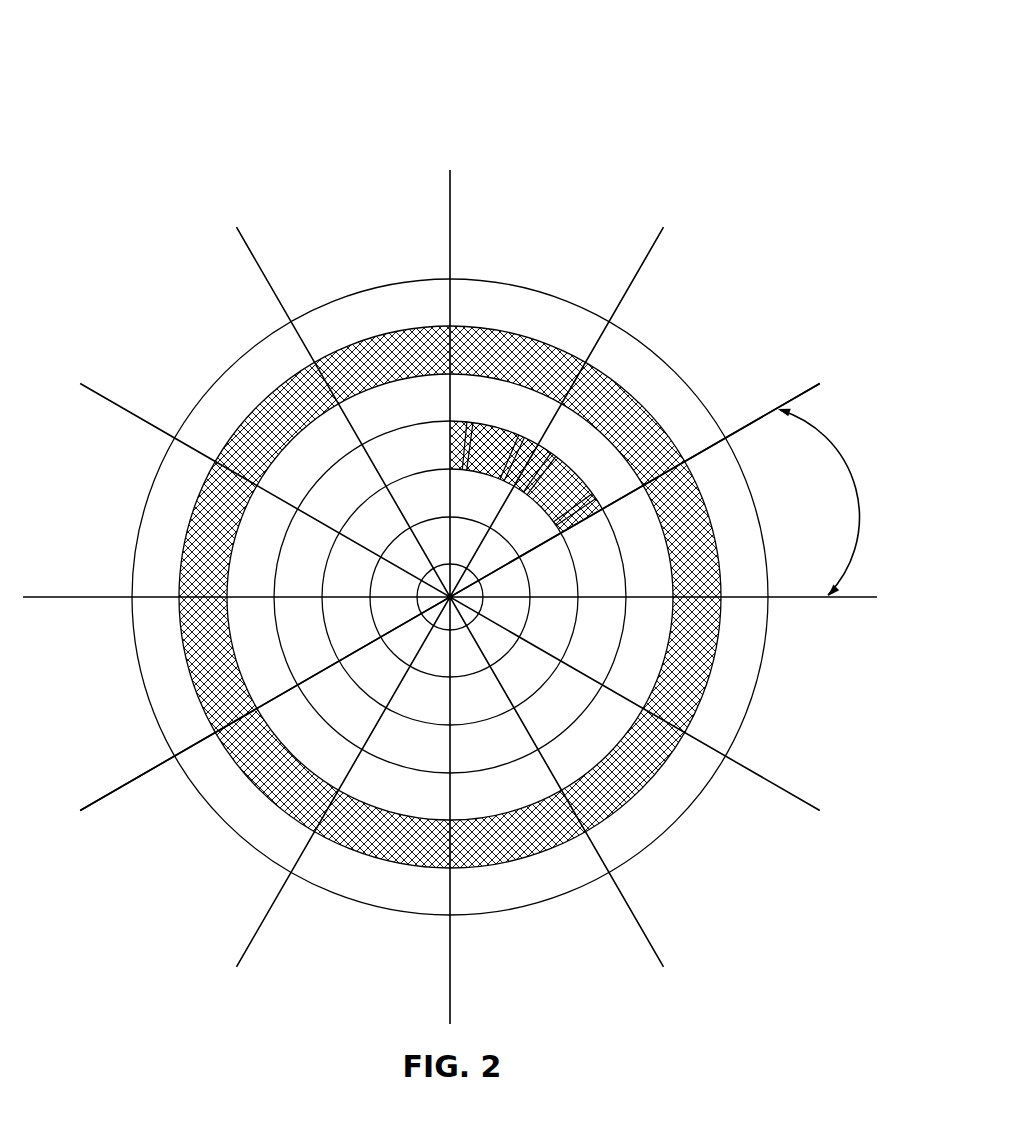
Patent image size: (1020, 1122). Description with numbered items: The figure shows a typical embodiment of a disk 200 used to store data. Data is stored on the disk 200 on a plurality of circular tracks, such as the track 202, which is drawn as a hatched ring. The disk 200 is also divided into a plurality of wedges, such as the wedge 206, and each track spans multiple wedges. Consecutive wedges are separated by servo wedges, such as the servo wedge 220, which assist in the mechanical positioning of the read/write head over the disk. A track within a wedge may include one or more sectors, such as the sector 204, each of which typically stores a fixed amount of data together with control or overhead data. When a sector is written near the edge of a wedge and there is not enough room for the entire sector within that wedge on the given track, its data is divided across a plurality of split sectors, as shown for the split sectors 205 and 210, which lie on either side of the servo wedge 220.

The disk 200 is at (780, 53).
The track 202 is at (265, 427).
The sector 204 is at (488, 433).
The split sector 205 is at (522, 447).
The split sector 210 is at (550, 453).
The servo wedge 220 is at (795, 398).
The wedge 206 is at (828, 436).